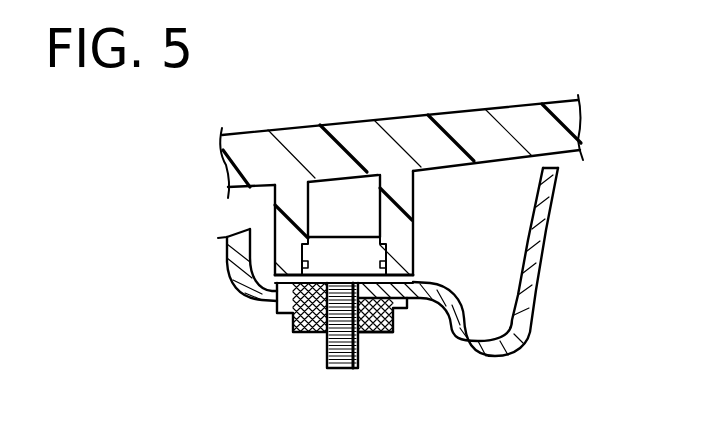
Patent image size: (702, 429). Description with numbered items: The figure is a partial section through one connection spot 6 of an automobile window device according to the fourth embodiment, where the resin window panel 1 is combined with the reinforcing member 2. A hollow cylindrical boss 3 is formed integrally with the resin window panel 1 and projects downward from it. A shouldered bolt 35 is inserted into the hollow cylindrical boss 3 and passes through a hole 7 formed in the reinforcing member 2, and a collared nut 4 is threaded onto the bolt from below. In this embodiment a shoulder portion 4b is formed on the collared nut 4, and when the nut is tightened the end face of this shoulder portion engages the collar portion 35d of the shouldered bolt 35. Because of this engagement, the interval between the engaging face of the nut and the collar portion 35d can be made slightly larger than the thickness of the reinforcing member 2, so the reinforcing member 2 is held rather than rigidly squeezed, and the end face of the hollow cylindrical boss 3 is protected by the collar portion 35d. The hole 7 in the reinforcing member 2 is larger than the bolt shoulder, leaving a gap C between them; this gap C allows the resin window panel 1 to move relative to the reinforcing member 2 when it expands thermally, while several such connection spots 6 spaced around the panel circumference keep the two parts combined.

The resin window panel 1 is at (436, 116).
The reinforcing member 2 is at (547, 266).
The hollow cylindrical boss 3 is at (417, 195).
The shouldered bolt 35 is at (368, 256).
The collar portion 35d is at (400, 275).
The collared nut 4 is at (317, 333).
The bolt flange 4b is at (300, 333).
The connection spot 6 is at (403, 343).
The hole 7 is at (262, 298).
The gap C is at (378, 334).